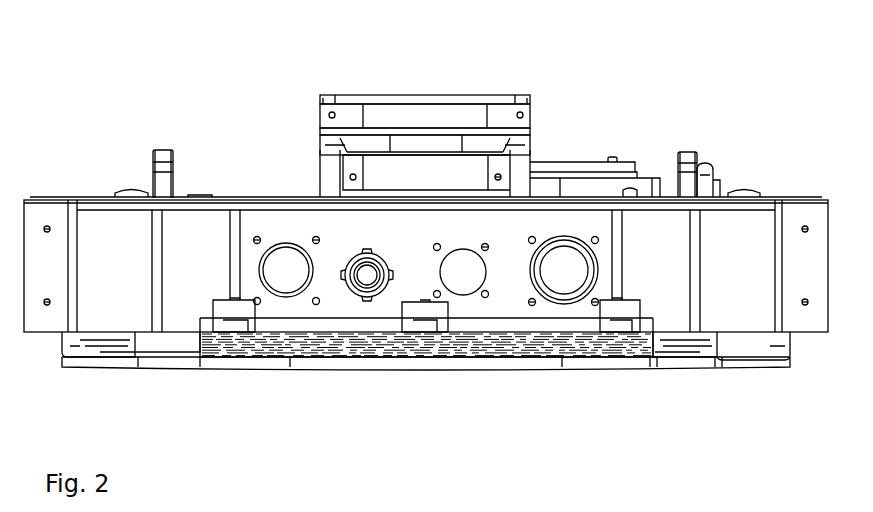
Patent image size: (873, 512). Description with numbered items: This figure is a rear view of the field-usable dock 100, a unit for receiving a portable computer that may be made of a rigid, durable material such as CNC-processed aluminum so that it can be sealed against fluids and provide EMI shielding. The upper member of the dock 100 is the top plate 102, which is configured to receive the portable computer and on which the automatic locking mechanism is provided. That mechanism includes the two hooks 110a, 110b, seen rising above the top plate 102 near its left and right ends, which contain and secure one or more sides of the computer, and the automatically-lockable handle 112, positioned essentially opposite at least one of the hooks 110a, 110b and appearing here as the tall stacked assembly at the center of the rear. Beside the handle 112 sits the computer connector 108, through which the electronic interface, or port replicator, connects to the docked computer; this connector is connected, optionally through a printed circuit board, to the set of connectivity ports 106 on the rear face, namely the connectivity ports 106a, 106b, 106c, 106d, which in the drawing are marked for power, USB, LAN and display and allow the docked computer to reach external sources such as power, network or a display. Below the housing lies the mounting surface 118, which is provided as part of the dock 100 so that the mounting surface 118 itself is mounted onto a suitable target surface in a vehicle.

The dock 100 is at (602, 43).
The top plate 102 is at (265, 198).
The connectivity ports 106 is at (335, 310).
The connectivity port 106a is at (287, 265).
The connectivity port 106b is at (370, 278).
The connectivity port 106c is at (461, 261).
The connectivity port 106d is at (564, 264).
The computer connector 108 is at (562, 152).
The hook 110a is at (170, 137).
The hook 110b is at (690, 140).
The automatically-lockable handle 112 is at (385, 78).
The mounting surface 118 is at (525, 362).